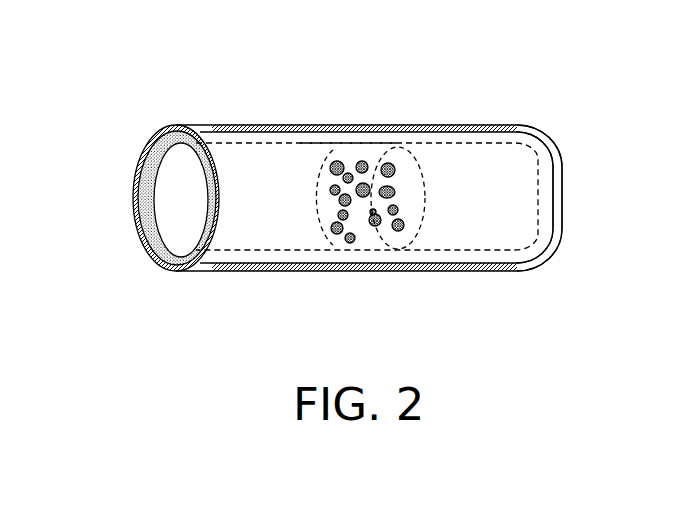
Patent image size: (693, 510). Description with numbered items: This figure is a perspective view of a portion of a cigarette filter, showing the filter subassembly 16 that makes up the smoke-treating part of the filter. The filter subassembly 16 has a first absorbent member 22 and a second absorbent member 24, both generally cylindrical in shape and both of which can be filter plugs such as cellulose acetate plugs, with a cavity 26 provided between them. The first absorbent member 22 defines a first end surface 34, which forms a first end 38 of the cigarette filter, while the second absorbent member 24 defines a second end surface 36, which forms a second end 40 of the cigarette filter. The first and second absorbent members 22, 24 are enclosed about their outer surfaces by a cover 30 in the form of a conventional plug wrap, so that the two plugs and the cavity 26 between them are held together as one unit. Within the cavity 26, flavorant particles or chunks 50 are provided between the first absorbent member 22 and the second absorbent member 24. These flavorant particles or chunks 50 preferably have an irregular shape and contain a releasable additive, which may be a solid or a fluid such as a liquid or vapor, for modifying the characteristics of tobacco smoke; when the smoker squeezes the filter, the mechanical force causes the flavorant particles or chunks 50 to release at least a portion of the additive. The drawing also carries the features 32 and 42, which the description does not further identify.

The filter subassembly 16 is at (229, 112).
The first absorbent member 22 is at (260, 230).
The second absorbent member 24 is at (484, 234).
The cavity 26 is at (359, 219).
The cover 30 is at (347, 143).
The bottom tube wall 32 is at (467, 253).
The first end surface 34 is at (165, 206).
The second end surface 36 is at (540, 186).
The first end 38 is at (152, 121).
The second end 40 is at (562, 208).
The top tube wall 42 is at (455, 122).
The flavorant particles or chunks 50 is at (394, 192).